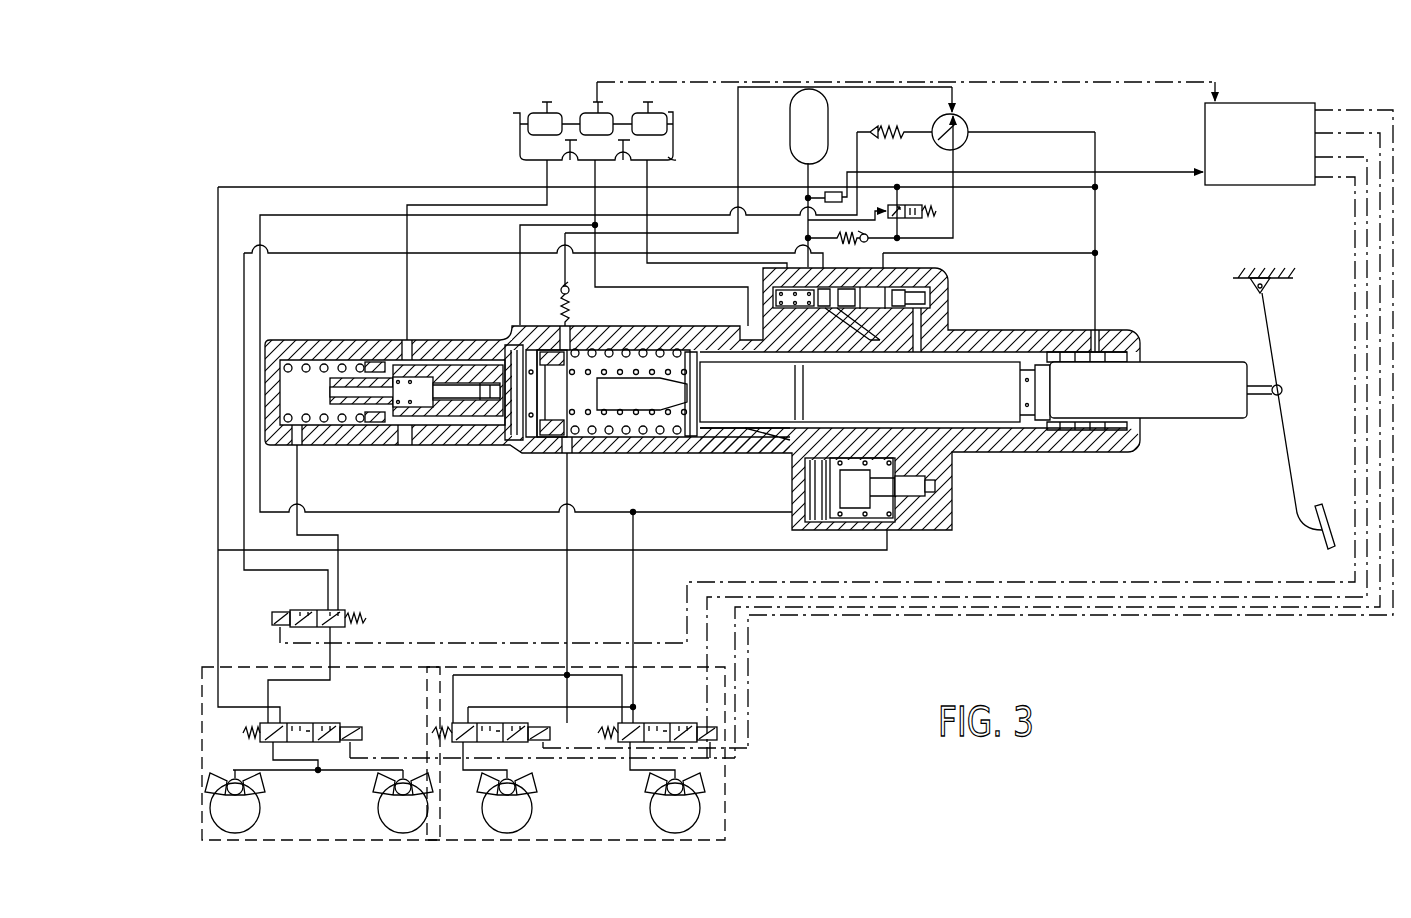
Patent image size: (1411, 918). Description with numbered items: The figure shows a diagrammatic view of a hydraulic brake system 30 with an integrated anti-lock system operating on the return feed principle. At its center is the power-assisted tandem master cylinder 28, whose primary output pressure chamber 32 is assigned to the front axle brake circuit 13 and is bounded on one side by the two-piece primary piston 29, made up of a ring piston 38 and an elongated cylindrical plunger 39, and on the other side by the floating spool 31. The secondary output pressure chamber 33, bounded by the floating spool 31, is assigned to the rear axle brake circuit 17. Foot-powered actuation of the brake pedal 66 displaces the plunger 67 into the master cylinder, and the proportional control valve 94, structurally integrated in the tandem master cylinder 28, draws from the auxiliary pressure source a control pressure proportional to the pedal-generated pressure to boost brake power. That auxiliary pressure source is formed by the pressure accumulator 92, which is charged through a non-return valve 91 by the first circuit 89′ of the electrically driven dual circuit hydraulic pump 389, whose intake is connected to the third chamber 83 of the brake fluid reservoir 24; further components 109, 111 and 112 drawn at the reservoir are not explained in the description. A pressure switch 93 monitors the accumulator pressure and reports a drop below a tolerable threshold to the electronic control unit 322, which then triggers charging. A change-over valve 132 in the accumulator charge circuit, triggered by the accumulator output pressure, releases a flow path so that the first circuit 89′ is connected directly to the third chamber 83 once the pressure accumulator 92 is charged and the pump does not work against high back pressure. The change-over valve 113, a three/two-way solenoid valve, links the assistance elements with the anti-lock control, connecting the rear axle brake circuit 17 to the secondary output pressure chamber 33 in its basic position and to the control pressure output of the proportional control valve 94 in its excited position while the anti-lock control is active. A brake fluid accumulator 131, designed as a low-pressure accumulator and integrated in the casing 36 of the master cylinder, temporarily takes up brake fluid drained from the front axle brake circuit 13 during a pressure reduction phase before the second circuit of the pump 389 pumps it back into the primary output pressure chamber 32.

The front axle brake circuit 13 is at (507, 667).
The rear axle brake circuit 17 is at (321, 718).
The brake fluid reservoir 24 is at (609, 115).
The tandem master cylinder 28 is at (638, 460).
The primary piston 29 is at (703, 458).
The brake system 30 is at (985, 455).
The floating spool 31 is at (442, 363).
The primary output pressure chamber 32 is at (537, 452).
The secondary output pressure chamber 33 is at (299, 383).
The casing 36 is at (755, 448).
The ring piston 38 is at (790, 430).
The plunger 39 is at (978, 372).
The brake pedal 66 is at (1287, 458).
The plunger 67 is at (1192, 368).
The third chamber 83 is at (673, 157).
The first circuit 89′ is at (957, 138).
The non-return valve 91 is at (858, 246).
The pressure accumulator 92 is at (792, 122).
The pressure switch 93 is at (833, 192).
The proportional control valve 94 is at (953, 300).
The sensor 109 is at (587, 118).
The sensor 111 is at (542, 113).
The sensor 112 is at (655, 118).
The change-over valve 113 is at (330, 630).
The brake fluid accumulator 131 is at (842, 535).
The change-over valve 132 is at (913, 218).
The electronic control unit 322 is at (1247, 177).
The hydraulic pump 389 is at (979, 123).